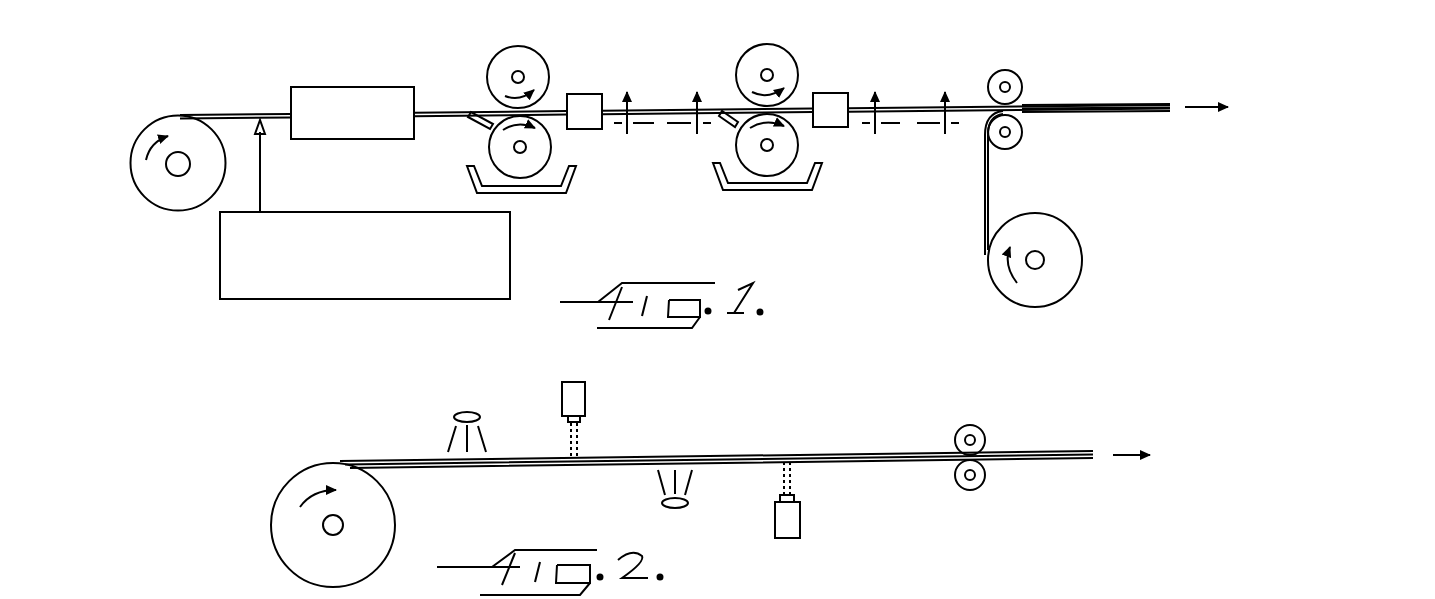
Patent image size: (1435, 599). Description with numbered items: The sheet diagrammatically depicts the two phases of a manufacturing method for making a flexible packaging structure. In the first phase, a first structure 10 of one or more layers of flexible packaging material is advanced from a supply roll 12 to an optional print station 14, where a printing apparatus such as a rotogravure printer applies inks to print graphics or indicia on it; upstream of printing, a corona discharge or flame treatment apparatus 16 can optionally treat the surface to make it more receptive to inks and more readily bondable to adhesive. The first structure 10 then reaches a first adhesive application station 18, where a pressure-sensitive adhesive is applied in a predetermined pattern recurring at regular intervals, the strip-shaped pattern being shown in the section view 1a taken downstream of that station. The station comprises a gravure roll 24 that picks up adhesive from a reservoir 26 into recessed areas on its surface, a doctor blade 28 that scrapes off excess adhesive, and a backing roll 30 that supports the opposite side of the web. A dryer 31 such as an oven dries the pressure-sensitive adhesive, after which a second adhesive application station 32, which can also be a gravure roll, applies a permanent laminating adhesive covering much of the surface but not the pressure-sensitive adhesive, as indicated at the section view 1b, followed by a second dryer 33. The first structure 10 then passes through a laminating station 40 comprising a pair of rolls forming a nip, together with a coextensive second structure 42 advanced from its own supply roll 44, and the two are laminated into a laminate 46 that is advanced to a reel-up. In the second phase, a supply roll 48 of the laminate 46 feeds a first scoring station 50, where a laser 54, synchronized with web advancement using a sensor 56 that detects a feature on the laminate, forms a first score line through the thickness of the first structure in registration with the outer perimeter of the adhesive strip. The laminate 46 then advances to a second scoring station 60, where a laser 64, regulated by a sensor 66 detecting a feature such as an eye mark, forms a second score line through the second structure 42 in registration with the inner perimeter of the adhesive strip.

In FIG. 1, the first structure 10 is at (225, 113).
In FIG. 1, the supply roll 12 is at (146, 134).
In FIG. 1, the print station 14 is at (325, 87).
In FIG. 1, the corona discharge or flame treatment apparatus 16 is at (220, 258).
In FIG. 1, the first adhesive application station 18 is at (487, 48).
In FIG. 1, the gravure roll 24 is at (497, 148).
In FIG. 1, the reservoir 26 is at (556, 198).
In FIG. 1, the doctor blade 28 is at (472, 112).
In FIG. 1, the backing roll 30 is at (531, 57).
In FIG. 1, the dryer 31 is at (585, 94).
In FIG. 1, the second adhesive application station 32 is at (774, 40).
In FIG. 1, the dryer 33 is at (828, 93).
In FIG. 1, the FIG. 1a is at (665, 94).
In FIG. 1, the FIG. 1b is at (912, 93).
In FIG. 1, the laminating station 40 is at (1042, 88).
In FIG. 1, the second structure 42 is at (985, 197).
In FIG. 1, the supply roll 44 is at (1073, 258).
In FIG. 1, the laminate 46 is at (1159, 98).
In FIG. 2, the laminate 46 is at (390, 448).
In FIG. 2, the supply roll 48 is at (278, 513).
In FIG. 2, the first scoring station 50 is at (550, 388).
In FIG. 2, the laser 54 is at (578, 404).
In FIG. 2, the sensor 56 is at (463, 411).
In FIG. 2, the second scoring station 60 is at (810, 527).
In FIG. 2, the laser 64 is at (797, 512).
In FIG. 2, the sensor 66 is at (662, 503).